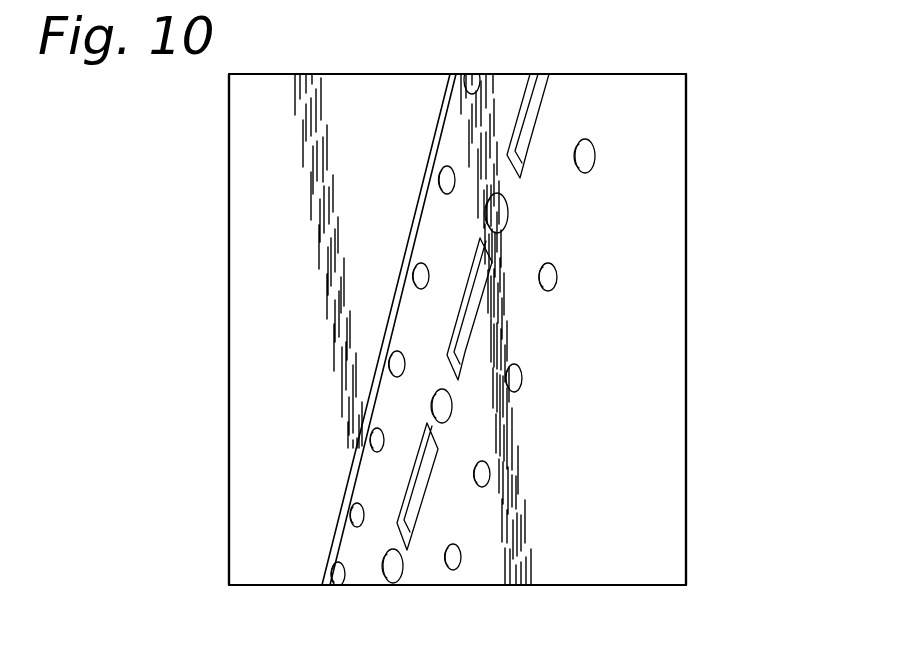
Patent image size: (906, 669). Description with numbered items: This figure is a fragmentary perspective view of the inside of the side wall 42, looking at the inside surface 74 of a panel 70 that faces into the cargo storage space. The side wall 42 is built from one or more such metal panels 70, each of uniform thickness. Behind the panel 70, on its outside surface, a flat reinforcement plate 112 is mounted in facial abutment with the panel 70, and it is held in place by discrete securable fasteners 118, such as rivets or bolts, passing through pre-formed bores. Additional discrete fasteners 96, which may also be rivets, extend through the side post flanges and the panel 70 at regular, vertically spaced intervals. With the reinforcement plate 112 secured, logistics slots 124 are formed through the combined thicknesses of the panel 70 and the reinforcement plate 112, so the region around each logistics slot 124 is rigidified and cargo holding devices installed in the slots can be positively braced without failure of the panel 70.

The side wall 42 is at (677, 260).
The panel 70 is at (646, 302).
The inside surface 74 is at (302, 300).
The fastener 96 is at (467, 80).
The reinforcement plate 112 is at (533, 110).
The fastener 118 is at (503, 216).
The logistics slot 124 is at (415, 511).